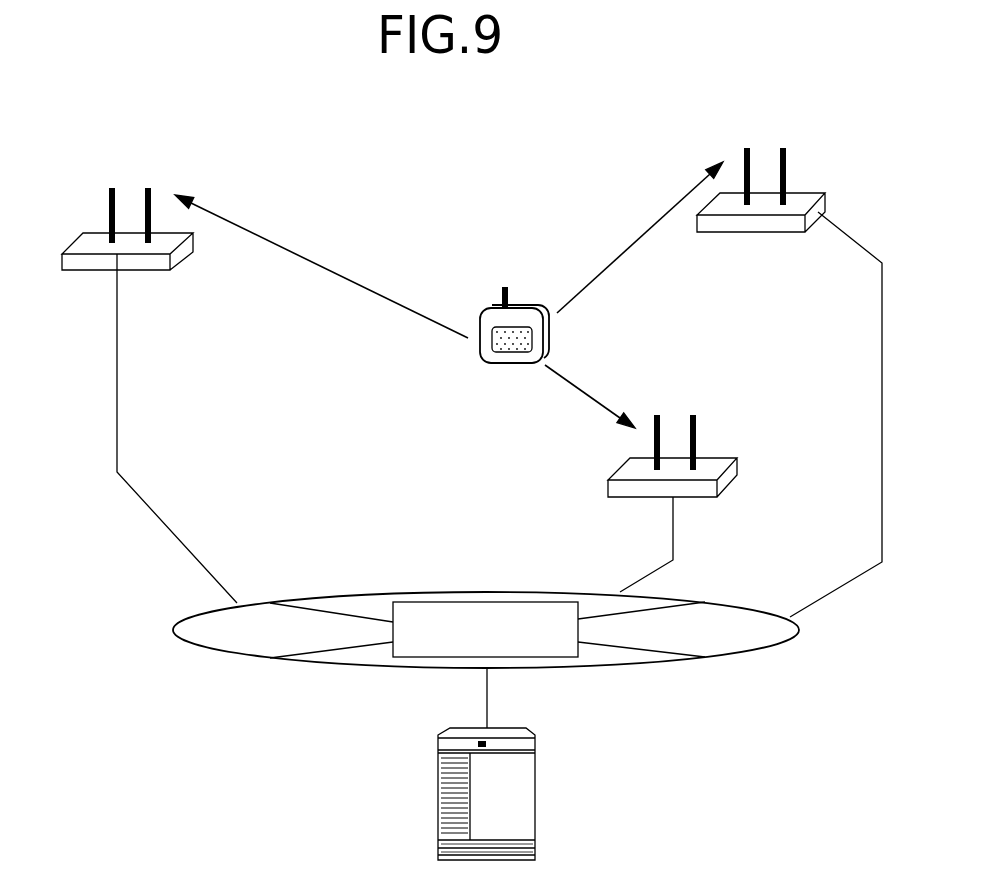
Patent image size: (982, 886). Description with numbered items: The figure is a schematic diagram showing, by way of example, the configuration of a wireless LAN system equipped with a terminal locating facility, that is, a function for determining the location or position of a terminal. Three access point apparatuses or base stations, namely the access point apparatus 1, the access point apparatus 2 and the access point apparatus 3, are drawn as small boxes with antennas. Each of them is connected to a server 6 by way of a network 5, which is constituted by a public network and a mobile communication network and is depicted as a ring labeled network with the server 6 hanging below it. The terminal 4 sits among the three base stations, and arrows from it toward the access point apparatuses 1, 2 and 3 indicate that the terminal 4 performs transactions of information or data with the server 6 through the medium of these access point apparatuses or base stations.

The access point apparatus 1 is at (832, 200).
The access point apparatus 2 is at (742, 465).
The access point apparatus 3 is at (72, 245).
The terminal 4 is at (508, 365).
The network 5 is at (488, 592).
The server 6 is at (535, 792).